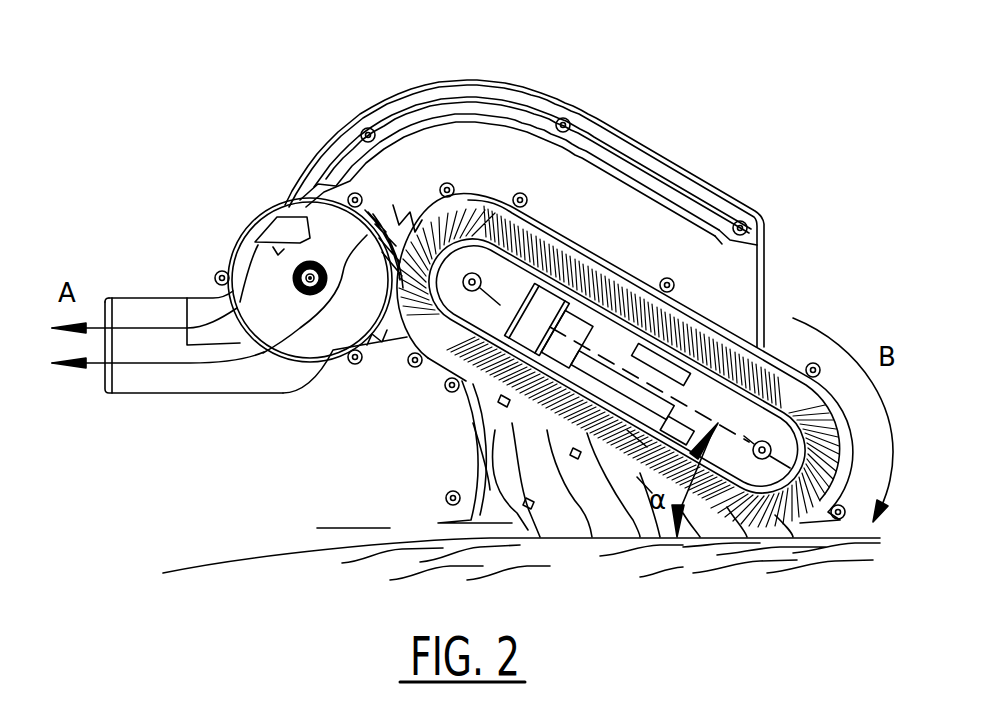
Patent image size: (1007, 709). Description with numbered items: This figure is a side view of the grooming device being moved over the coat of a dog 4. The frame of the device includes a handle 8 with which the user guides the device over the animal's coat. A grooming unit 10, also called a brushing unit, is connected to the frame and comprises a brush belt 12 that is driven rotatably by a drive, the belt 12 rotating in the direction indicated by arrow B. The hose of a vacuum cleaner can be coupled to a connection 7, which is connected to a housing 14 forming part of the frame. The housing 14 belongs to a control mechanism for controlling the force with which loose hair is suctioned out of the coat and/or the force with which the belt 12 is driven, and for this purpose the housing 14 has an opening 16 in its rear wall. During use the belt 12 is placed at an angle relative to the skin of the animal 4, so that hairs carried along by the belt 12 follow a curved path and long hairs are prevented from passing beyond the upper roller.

The dog 4 is at (263, 571).
The connection 7 is at (170, 378).
The handle 8 is at (650, 163).
The grooming unit 10 is at (415, 421).
The brush belt 12 is at (493, 240).
The housing 14 is at (248, 263).
The opening 16 is at (300, 233).